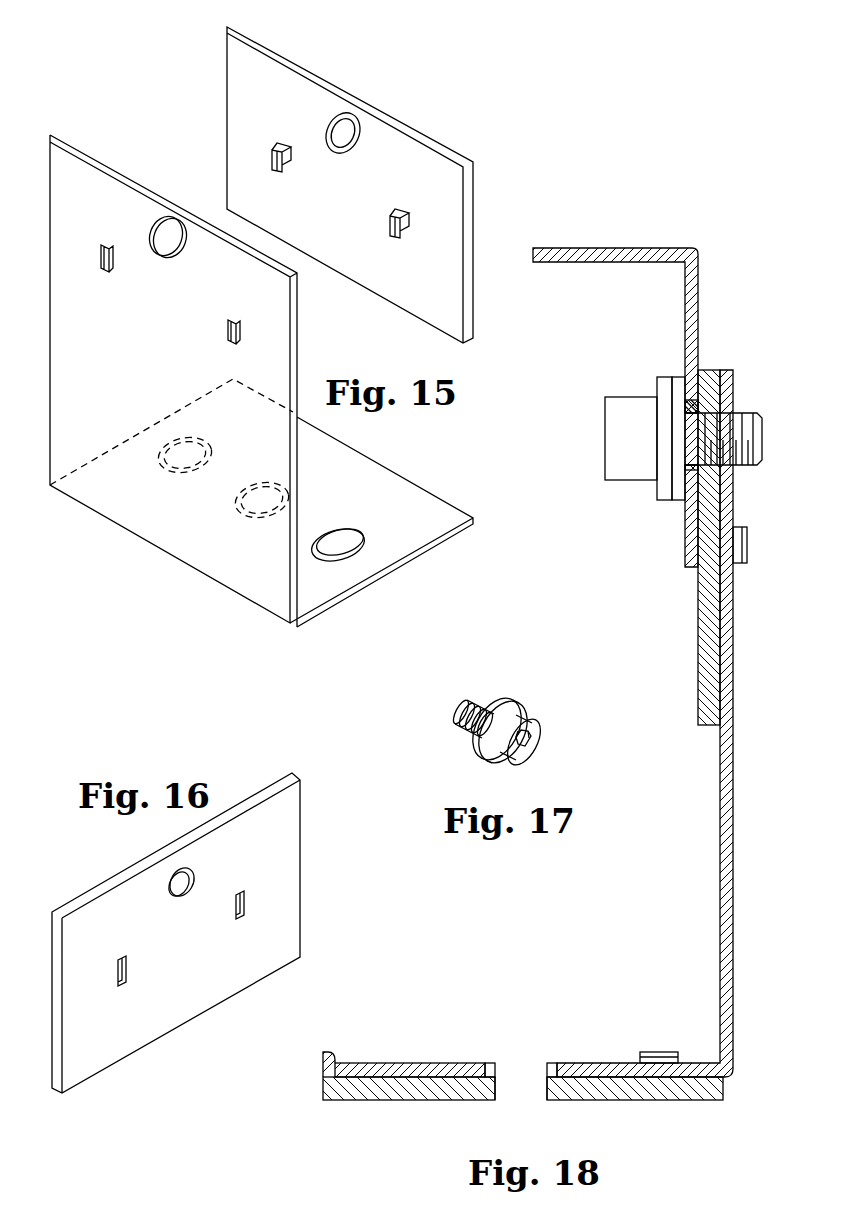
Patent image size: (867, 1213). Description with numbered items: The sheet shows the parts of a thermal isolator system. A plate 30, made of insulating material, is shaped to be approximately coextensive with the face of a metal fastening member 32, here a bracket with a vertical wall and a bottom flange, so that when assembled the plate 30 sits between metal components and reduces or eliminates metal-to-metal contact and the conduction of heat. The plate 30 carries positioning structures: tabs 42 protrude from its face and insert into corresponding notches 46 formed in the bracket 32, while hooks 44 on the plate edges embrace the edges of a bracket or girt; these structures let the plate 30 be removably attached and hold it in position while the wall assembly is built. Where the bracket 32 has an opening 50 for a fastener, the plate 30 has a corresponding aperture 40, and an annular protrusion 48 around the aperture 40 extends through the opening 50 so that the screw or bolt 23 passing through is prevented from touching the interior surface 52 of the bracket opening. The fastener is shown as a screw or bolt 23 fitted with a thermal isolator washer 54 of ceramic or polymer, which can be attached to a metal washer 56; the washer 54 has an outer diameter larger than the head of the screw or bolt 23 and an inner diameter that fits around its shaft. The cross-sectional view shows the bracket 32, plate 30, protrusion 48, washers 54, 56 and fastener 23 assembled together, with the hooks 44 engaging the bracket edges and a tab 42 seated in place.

In FIG. 17, the screw or bolt 23 is at (540, 750).
In FIG. 18, the screw or bolt 23 is at (765, 438).
In FIG. 15, the plate 30 is at (415, 122).
In FIG. 16, the plate 30 is at (247, 797).
In FIG. 18, the plate 30 is at (707, 370).
In FIG. 15, the metal fastening member 32 is at (146, 540).
In FIG. 18, the metal fastening member 32 is at (613, 248).
In FIG. 15, the aperture 40 is at (342, 138).
In FIG. 16, the aperture 40 is at (178, 900).
In FIG. 18, the aperture 40 is at (524, 1087).
In FIG. 15, the tabs 42 is at (280, 140).
In FIG. 18, the tabs 42 is at (747, 547).
In FIG. 18, the hooks 44 is at (331, 1050).
In FIG. 15, the notches 46 is at (105, 272).
In FIG. 15, the annular protrusion 48 is at (327, 152).
In FIG. 18, the annular protrusion 48 is at (553, 1063).
In FIG. 15, the opening 50 is at (175, 220).
In FIG. 15, the interior surface 52 is at (167, 258).
In FIG. 18, the interior surface 52 is at (687, 415).
In FIG. 17, the washer 54 is at (490, 700).
In FIG. 18, the washer 54 is at (680, 378).
In FIG. 17, the metal washer 56 is at (500, 766).
In FIG. 18, the metal washer 56 is at (662, 502).